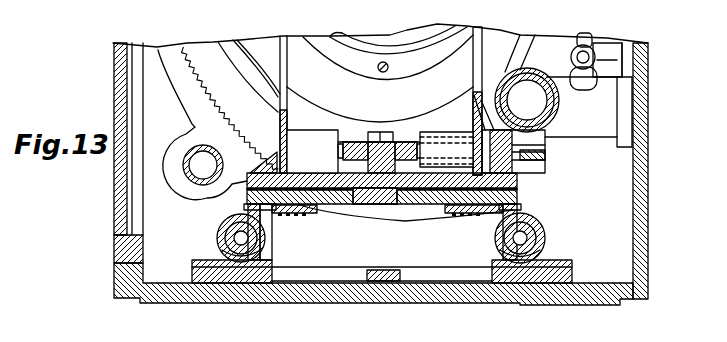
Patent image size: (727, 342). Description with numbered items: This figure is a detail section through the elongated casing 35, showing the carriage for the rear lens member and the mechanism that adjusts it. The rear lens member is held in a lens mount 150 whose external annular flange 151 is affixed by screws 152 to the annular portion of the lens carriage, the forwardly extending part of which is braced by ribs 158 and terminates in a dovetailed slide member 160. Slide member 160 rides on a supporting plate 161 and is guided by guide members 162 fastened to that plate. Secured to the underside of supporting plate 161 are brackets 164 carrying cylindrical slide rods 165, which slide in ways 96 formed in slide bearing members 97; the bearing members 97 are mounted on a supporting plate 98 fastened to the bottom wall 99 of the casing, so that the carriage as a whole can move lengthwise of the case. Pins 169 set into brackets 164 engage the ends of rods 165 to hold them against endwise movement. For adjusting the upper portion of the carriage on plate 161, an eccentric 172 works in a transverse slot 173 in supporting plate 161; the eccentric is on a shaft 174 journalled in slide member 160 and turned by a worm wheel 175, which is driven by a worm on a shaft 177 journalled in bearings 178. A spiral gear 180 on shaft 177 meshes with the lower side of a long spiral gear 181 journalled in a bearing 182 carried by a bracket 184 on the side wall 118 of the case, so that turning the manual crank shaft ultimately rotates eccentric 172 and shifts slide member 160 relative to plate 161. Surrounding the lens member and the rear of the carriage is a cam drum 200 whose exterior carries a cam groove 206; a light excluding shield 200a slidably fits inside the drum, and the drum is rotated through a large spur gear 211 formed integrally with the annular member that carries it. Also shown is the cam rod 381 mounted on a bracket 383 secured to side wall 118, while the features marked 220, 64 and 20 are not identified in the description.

The cam groove 206 is at (220, 50).
The cam drum 200 is at (262, 48).
The light excluding shield 200a is at (238, 55).
The large spur gear 211 is at (197, 87).
The side wall 220 is at (118, 85).
The pivot bushing 64 is at (193, 188).
The lens mount 150 is at (343, 44).
The frame member 20 is at (365, 35).
The external annular flange 151 is at (450, 24).
The screws 152 is at (388, 66).
The ribs 158 is at (287, 76).
The bearings 178 is at (309, 130).
The worm wheel 175 is at (356, 128).
The shaft 174 is at (393, 141).
The shaft 177 is at (463, 141).
The spiral gear 180 is at (520, 180).
The long spiral gear 181 is at (556, 106).
The bearing 182 is at (505, 72).
The cam rod 381 is at (597, 36).
The bracket 383 is at (608, 67).
The bracket 184 is at (605, 129).
The dovetailed slide member 160 is at (333, 207).
The eccentric 172 is at (361, 207).
The transverse slot 173 is at (397, 206).
The supporting plate 161 is at (434, 213).
The guide members 162 is at (255, 173).
The slide rods 165 is at (247, 218).
The slide bearing members 97 is at (216, 232).
The ways 96 is at (226, 243).
The brackets 164 is at (270, 237).
The pins 169 is at (262, 246).
The side wall 118 is at (648, 210).
The casing 35 is at (652, 243).
The supporting plate 98 is at (258, 293).
The bottom wall 99 is at (342, 298).